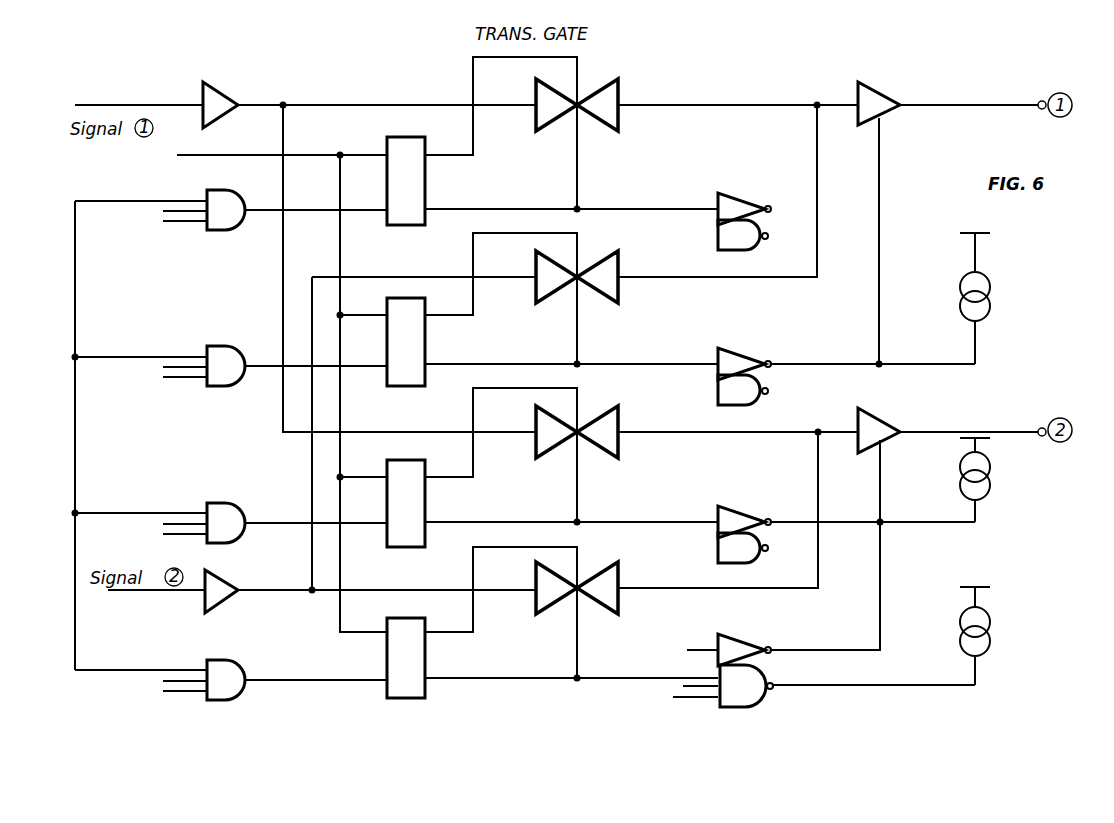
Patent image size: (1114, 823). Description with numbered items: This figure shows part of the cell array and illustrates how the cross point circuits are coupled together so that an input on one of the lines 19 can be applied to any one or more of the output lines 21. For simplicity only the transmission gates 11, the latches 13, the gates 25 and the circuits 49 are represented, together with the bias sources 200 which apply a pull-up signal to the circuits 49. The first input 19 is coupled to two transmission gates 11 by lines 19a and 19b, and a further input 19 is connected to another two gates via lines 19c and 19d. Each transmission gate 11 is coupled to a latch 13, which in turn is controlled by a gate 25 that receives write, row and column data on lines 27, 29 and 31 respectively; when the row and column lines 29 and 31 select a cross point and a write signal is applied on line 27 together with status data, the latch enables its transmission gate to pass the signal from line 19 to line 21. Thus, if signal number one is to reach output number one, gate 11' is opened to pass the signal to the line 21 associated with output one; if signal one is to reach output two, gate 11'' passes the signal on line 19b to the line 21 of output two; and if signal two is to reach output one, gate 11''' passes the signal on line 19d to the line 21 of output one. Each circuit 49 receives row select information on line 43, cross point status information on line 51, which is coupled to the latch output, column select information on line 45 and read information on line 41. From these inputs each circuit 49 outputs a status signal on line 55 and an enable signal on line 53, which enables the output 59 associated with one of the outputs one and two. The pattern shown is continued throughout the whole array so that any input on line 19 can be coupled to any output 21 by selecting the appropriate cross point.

The input line 19 is at (160, 100).
The line coupling input to first gate 19a is at (337, 105).
The line coupling input to second gate 19b is at (283, 230).
The line coupling further input to gate 19c is at (352, 590).
The line coupling further input to gate 11''' 19d is at (312, 540).
The gate 25 is at (205, 232).
The write line 27 is at (118, 360).
The column line 31 is at (165, 367).
The row line 29 is at (185, 380).
The latch 13 is at (406, 417).
The transmission gate 11 is at (566, 609).
The transmission gate 11' is at (597, 84).
The transmission gate 11'' is at (601, 440).
The transmission gate 11''' is at (602, 283).
The cross point status line 51 is at (683, 205).
The circuit 49 is at (735, 192).
The row select line 43 is at (703, 648).
The column select line 45 is at (685, 686).
The read line 41 is at (690, 700).
The enable signal line 53 is at (845, 648).
The status line 55 is at (870, 688).
The output 59 is at (872, 82).
The output line 21 is at (965, 103).
The bias source 200 is at (992, 300).